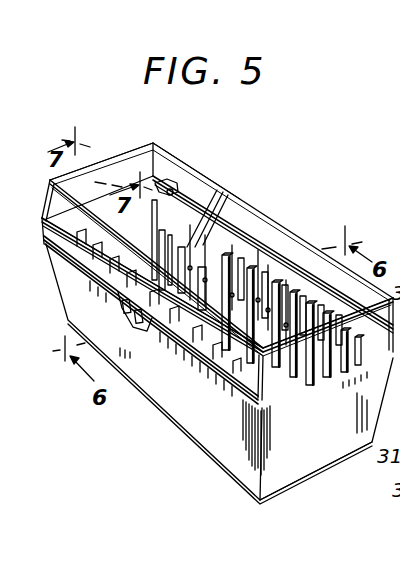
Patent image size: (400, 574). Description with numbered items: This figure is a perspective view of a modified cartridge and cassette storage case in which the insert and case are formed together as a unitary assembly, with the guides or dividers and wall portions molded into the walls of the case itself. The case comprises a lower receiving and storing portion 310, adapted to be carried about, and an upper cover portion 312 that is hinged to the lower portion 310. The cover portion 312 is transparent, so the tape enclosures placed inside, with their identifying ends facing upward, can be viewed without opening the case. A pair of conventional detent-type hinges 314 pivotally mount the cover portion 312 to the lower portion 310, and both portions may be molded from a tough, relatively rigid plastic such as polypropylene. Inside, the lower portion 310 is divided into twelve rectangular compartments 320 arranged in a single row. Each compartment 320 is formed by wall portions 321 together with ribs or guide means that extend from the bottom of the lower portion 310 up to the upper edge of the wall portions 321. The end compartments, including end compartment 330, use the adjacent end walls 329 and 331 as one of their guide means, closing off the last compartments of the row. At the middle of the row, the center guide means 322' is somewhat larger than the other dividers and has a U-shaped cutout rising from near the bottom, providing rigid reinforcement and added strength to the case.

The lower receiving and storing portion 310 is at (233, 445).
The upper cover portion 312 is at (104, 173).
The hinges 314 is at (205, 187).
The compartments 320 is at (328, 246).
The wall portions 321 is at (297, 300).
The center guide means 322' is at (276, 261).
The end wall 329 is at (323, 458).
The end compartment 330 is at (160, 189).
The end wall 331 is at (195, 245).